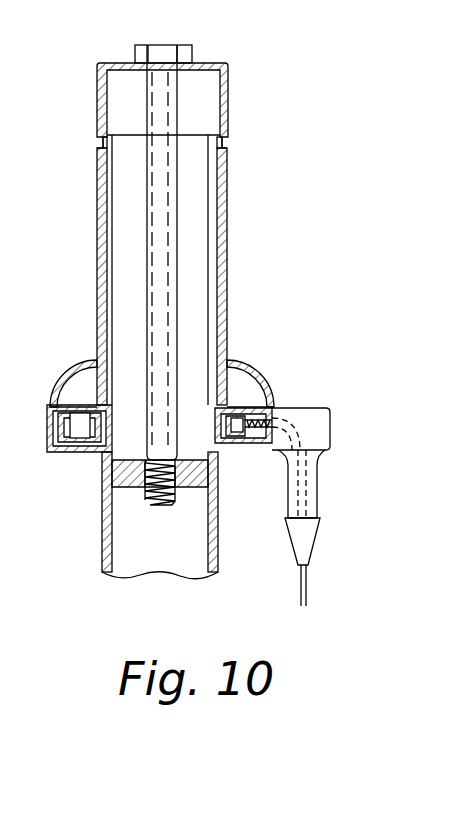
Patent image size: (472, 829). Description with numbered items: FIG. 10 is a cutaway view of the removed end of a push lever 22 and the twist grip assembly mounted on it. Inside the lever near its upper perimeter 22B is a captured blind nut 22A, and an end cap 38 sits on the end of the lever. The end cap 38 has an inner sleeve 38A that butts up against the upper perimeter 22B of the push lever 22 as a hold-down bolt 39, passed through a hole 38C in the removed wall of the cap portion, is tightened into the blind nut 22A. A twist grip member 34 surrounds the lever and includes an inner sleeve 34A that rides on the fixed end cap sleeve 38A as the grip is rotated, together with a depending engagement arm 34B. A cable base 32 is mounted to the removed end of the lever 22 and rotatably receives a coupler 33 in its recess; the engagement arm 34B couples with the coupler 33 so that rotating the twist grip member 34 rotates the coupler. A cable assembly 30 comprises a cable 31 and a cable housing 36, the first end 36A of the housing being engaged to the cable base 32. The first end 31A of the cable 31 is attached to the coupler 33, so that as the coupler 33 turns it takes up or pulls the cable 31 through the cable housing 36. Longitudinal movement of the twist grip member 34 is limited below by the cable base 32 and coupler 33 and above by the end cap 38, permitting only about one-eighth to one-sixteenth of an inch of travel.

The hold-down bolt 39 is at (165, 43).
The end cap 38 is at (230, 117).
The hole 38C is at (148, 73).
The inner sleeve 38A is at (98, 216).
The twist grip member 34 is at (97, 318).
The inner sleeve 34A is at (98, 187).
The engagement arm 34B is at (87, 440).
The upper perimeter 22B is at (122, 407).
The coupler 33 is at (63, 413).
The first end 31A is at (258, 386).
The cable base 32 is at (315, 408).
The cable 31 is at (308, 463).
The first end 36A is at (315, 545).
The cable housing 36 is at (297, 583).
The cable assembly 30 is at (272, 565).
The blind nut 22A is at (123, 488).
The push lever 22 is at (101, 543).